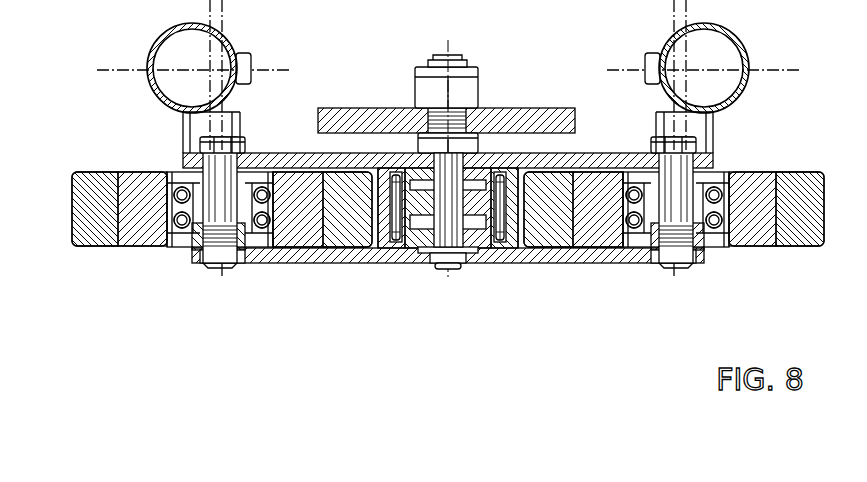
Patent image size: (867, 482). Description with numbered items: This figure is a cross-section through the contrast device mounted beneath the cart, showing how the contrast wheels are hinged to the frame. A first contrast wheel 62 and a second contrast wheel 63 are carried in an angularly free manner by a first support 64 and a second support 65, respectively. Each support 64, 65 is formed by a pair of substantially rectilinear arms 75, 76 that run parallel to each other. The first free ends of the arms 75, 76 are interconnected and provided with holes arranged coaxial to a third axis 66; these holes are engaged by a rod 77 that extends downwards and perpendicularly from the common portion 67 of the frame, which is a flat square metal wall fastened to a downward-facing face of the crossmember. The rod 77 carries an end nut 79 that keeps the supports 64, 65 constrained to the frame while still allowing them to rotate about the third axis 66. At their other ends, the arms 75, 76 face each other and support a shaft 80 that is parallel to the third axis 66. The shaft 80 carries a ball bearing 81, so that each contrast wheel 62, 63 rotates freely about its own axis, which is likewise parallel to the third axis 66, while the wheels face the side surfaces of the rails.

The first contrast wheel 62 is at (62, 240).
The second contrast wheel 63 is at (827, 240).
The first support 64 is at (252, 273).
The second support 65 is at (630, 272).
The third axis 66 is at (448, 52).
The common portion of the frame 67 is at (545, 116).
The arm 75 is at (300, 158).
The arm 76 is at (308, 255).
The rod 77 is at (499, 243).
The end nut 79 is at (447, 264).
The shaft 80 is at (192, 245).
The ball bearing 81 is at (172, 188).